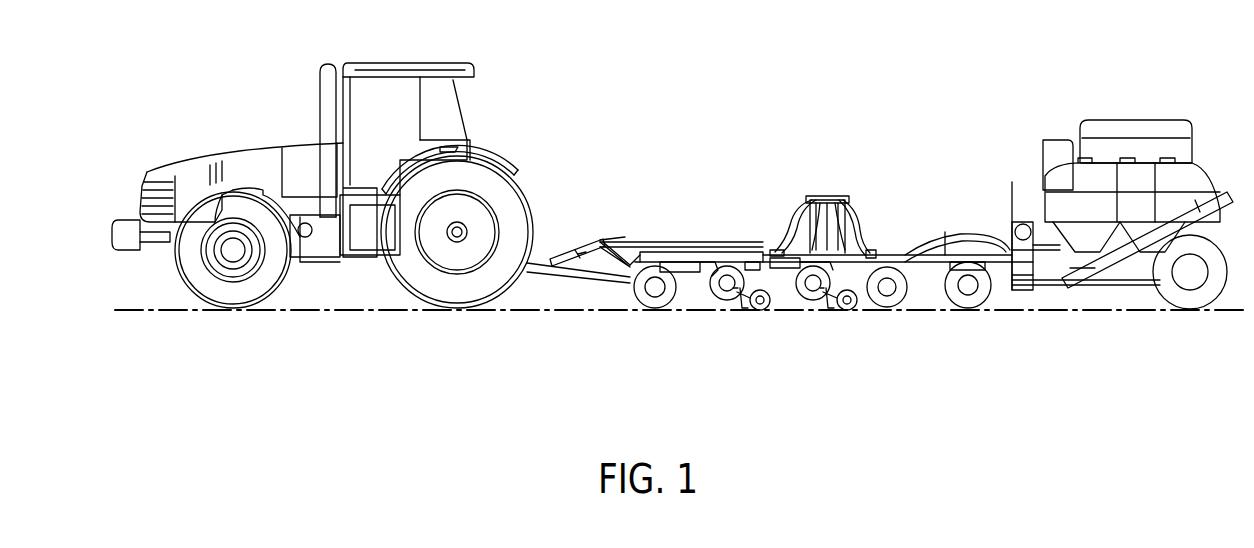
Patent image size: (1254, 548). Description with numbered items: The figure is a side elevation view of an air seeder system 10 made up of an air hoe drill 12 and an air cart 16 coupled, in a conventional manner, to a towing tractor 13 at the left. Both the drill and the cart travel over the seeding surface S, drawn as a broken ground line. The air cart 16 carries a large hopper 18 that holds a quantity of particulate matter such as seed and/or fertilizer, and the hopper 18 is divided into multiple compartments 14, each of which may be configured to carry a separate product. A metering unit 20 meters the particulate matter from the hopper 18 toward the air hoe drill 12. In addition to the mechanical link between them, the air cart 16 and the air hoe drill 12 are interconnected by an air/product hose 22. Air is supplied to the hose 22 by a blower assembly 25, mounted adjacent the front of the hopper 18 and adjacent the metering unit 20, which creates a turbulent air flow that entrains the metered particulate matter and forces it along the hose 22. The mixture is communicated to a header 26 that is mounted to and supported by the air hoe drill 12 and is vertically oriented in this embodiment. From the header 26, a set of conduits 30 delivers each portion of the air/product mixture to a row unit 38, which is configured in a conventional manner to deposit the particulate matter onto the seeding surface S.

The air seeder system 10 is at (935, 108).
The air hoe drill 12 is at (723, 207).
The towing tractor 13 is at (282, 90).
The compartments 14 is at (1167, 180).
The air cart 16 is at (1153, 113).
The hopper 18 is at (1210, 177).
The metering unit 20 is at (1148, 223).
The air/product hose 22 is at (910, 240).
The blower assembly 25 is at (1012, 222).
The header 26 is at (823, 195).
The conduits 30 is at (805, 235).
The row unit 38 is at (833, 318).
The seeding surface S is at (340, 312).